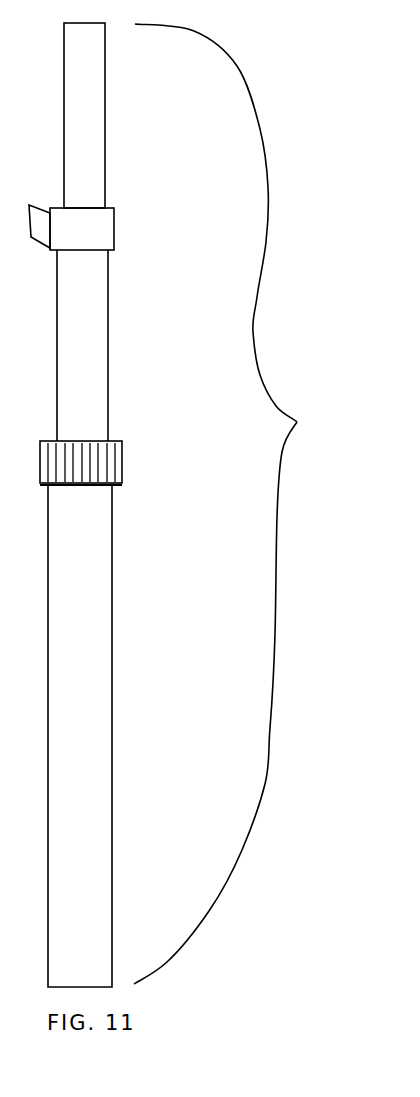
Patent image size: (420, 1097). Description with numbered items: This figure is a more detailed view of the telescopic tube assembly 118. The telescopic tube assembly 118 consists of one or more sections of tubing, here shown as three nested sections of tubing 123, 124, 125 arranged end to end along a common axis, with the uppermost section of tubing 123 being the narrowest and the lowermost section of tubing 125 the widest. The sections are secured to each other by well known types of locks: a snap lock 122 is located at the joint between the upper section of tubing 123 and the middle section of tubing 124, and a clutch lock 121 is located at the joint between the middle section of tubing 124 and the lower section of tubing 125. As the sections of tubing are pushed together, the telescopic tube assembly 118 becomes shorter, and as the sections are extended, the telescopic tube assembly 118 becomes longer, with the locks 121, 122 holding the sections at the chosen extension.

The telescopic tube assembly 118 is at (241, 504).
The clutch lock 121 is at (123, 470).
The snap lock 122 is at (114, 238).
The section of tubing 123 is at (86, 122).
The section of tubing 124 is at (109, 346).
The section of tubing 125 is at (113, 645).